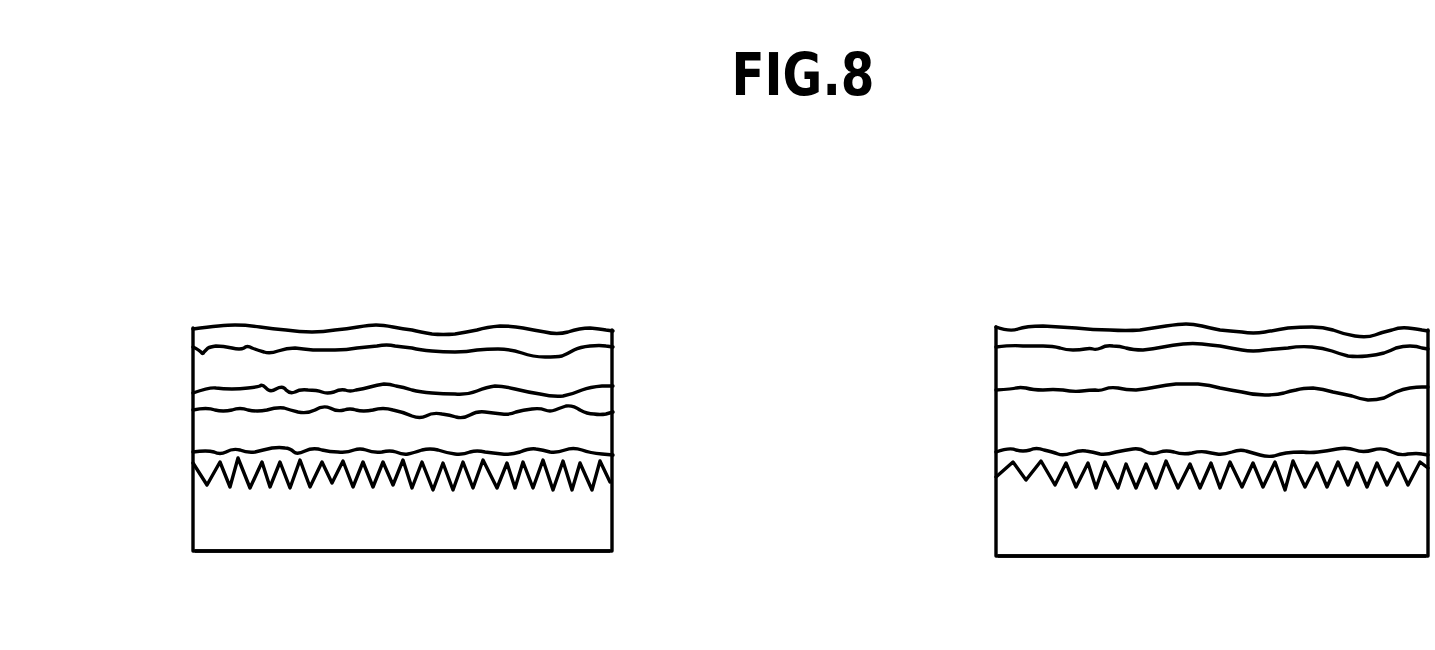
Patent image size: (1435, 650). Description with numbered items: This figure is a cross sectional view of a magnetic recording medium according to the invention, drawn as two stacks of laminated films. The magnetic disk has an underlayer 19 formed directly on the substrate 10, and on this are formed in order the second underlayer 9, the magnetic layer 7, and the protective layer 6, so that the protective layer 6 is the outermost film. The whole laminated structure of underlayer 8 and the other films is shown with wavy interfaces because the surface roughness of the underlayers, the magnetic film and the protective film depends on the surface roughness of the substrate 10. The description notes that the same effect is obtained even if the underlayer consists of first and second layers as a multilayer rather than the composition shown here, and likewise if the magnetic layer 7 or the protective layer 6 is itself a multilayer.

The protective layer 6 is at (613, 338).
The magnetic layer 7 is at (613, 373).
The underlayer 8 is at (193, 400).
The second underlayer 9 is at (613, 427).
The underlayer 19 is at (613, 462).
The substrate 10 is at (613, 525).